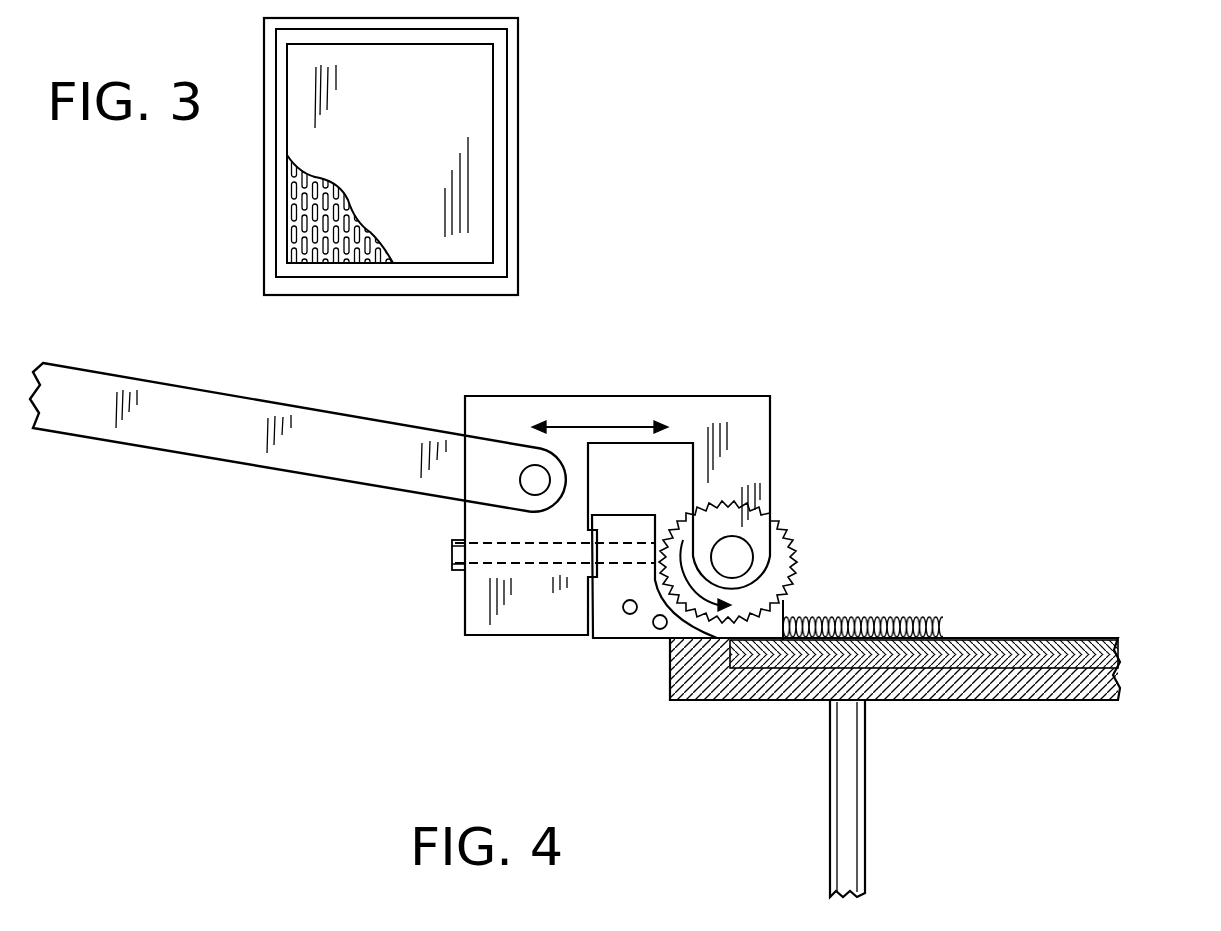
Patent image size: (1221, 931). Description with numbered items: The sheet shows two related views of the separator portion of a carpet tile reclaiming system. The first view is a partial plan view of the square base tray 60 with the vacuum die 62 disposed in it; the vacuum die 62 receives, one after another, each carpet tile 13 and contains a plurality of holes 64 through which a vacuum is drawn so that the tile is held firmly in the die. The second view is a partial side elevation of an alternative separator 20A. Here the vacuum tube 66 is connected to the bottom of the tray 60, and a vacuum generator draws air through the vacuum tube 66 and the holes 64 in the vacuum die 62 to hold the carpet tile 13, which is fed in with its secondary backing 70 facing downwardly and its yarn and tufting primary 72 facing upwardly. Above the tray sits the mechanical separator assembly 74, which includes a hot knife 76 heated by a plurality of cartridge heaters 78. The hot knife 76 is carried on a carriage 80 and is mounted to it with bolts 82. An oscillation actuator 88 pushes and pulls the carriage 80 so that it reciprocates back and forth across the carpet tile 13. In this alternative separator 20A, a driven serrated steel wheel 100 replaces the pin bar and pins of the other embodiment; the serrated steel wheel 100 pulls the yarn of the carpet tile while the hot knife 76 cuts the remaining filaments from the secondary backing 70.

In FIG. 3, the carpet tile 13 is at (398, 121).
In FIG. 3, the base tray 60 is at (520, 273).
In FIG. 4, the base tray 60 is at (1072, 702).
In FIG. 3, the vacuum die 62 is at (498, 140).
In FIG. 4, the vacuum die 62 is at (1117, 660).
In FIG. 3, the holes 64 is at (317, 250).
In FIG. 4, the alternative separator 20A is at (792, 366).
In FIG. 4, the vacuum tube 66 is at (865, 808).
In FIG. 4, the secondary backing 70 is at (894, 600).
In FIG. 4, the yarn and tufting primary 72 is at (863, 618).
In FIG. 4, the mechanical separator assembly 74 is at (454, 615).
In FIG. 4, the hot knife 76 is at (603, 623).
In FIG. 4, the cartridge heaters 78 is at (657, 627).
In FIG. 4, the carriage 80 is at (463, 523).
In FIG. 4, the bolts 82 is at (452, 555).
In FIG. 4, the oscillation actuator 88 is at (193, 455).
In FIG. 4, the serrated steel wheel 100 is at (797, 558).